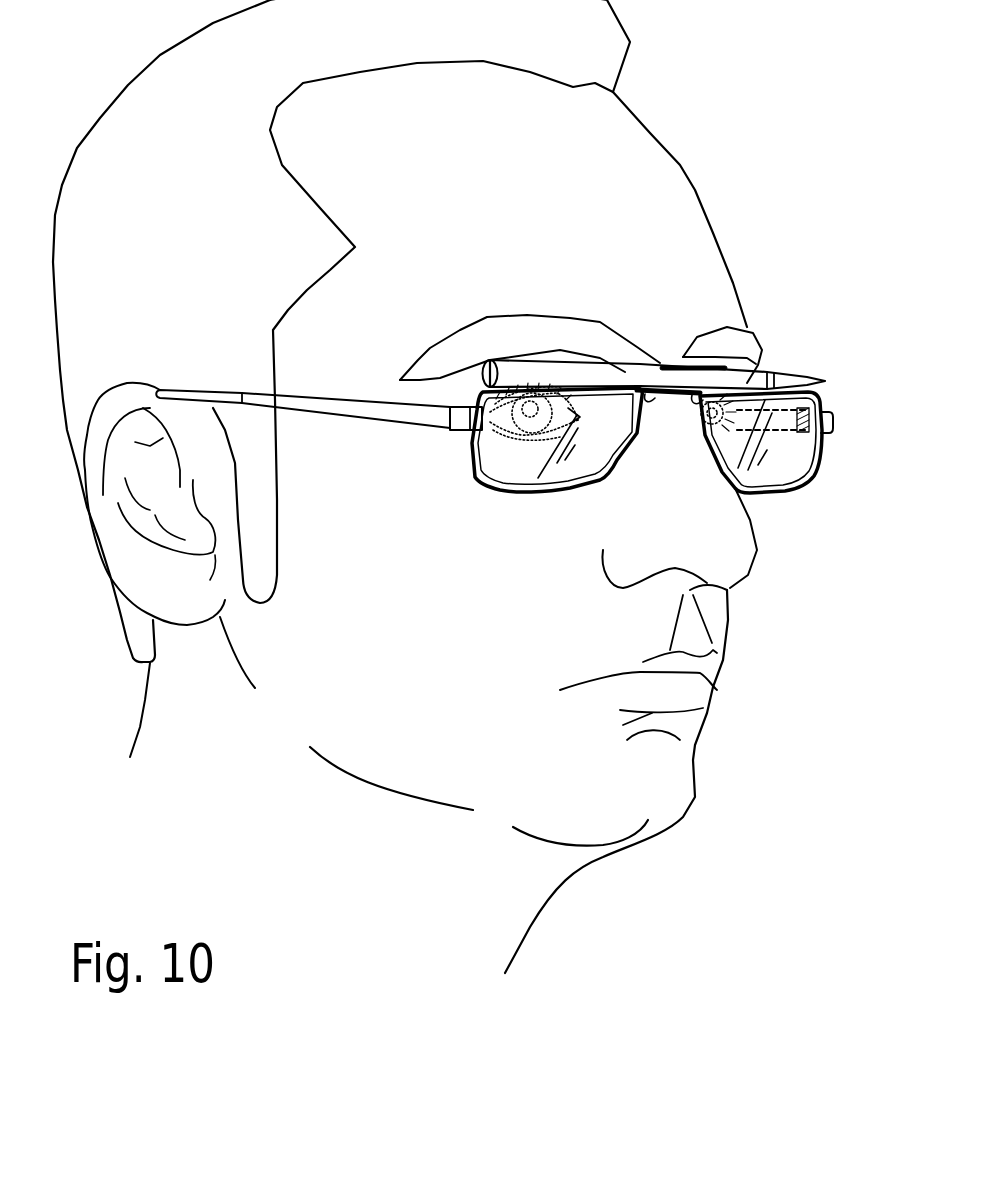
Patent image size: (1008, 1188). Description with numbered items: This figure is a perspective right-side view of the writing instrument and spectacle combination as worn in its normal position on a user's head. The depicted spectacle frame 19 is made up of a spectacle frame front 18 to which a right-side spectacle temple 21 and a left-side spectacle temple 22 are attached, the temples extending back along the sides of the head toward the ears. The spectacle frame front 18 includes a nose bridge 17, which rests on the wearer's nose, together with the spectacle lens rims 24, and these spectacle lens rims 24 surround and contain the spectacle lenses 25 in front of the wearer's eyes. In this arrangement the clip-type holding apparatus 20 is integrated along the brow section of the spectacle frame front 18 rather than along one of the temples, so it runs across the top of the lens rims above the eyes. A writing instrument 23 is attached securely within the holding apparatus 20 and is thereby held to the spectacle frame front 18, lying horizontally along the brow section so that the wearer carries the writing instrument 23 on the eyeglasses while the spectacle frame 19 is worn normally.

The nose bridge 17 is at (675, 398).
The spectacle frame front 18 is at (681, 323).
The spectacle frame 19 is at (460, 590).
The holding apparatus 20 is at (665, 365).
The right-side spectacle temple 21 is at (395, 418).
The left-side spectacle temple 22 is at (830, 412).
The writing instrument 23 is at (790, 372).
The spectacle lens rims 24 is at (520, 492).
The spectacle lenses 25 is at (513, 470).